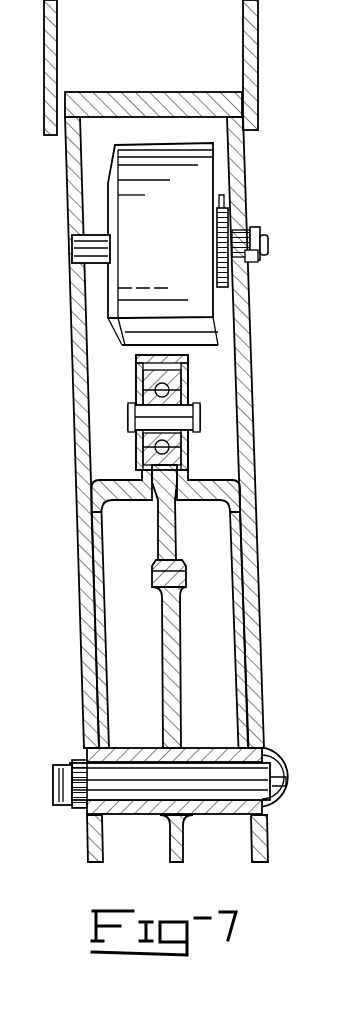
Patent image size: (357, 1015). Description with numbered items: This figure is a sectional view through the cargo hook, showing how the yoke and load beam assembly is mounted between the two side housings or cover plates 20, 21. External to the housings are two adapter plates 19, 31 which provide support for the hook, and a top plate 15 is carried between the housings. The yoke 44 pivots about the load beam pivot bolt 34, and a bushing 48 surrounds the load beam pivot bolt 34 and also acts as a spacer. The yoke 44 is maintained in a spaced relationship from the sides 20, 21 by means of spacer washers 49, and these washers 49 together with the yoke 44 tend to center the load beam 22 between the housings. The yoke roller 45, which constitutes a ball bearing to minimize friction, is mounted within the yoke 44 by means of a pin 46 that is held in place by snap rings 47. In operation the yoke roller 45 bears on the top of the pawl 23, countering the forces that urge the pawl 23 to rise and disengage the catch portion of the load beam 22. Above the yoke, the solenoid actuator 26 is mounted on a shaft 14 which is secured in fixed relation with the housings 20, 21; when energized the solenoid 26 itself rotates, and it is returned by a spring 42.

The shaft 14 is at (88, 232).
The top plate 15 is at (153, 85).
The adapter plate 19 is at (267, 65).
The side housing 20 is at (80, 642).
The side housing 21 is at (266, 650).
The load beam 22 is at (181, 647).
The pawl 23 is at (178, 512).
The solenoid actuator 26 is at (165, 239).
The adapter plate 31 is at (73, 67).
The load beam pivot bolt 34 is at (288, 796).
The spring 42 is at (224, 197).
The yoke 44 is at (120, 554).
The yoke roller 45 is at (186, 359).
The pin 46 is at (130, 410).
The snap rings 47 is at (160, 450).
The bushing 48 is at (155, 750).
The spacer washers 49 is at (85, 752).